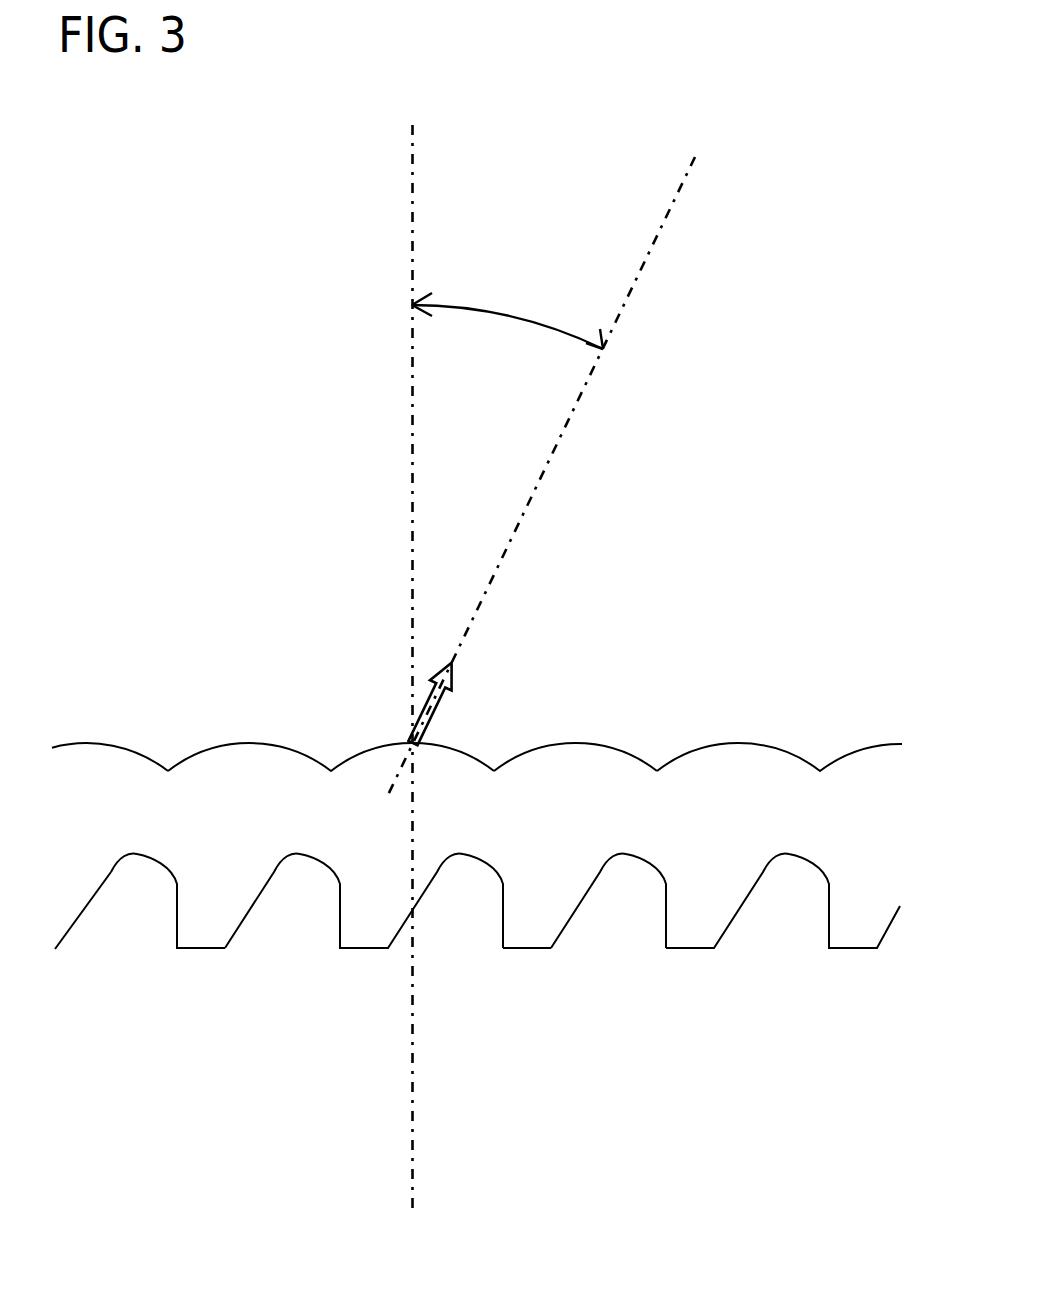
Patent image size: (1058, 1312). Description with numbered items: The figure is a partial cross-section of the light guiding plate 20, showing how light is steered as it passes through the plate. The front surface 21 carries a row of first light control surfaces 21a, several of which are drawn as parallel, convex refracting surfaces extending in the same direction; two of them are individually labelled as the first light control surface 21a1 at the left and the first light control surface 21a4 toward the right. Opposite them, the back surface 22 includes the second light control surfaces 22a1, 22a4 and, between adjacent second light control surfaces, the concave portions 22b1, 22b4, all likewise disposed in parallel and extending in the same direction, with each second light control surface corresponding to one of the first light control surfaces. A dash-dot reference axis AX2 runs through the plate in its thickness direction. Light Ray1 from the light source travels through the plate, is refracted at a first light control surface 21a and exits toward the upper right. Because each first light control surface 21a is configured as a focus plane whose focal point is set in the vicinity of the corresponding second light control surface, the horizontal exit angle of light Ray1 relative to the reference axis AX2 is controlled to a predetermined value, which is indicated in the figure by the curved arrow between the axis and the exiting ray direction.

The reference axis AX2 is at (413, 160).
The light Ray1 is at (456, 668).
The light guiding plate 20 is at (700, 622).
The front surface 21 is at (242, 697).
The first light control surface 21a is at (473, 724).
The first light control surface 21a1 is at (72, 746).
The first light control surface 21a4 is at (578, 746).
The back surface 22 is at (252, 1038).
The second light control surface 22a1 is at (55, 952).
The concave portion 22b1 is at (137, 927).
The second light control surface 22a4 is at (525, 950).
The concave portion 22b4 is at (615, 930).